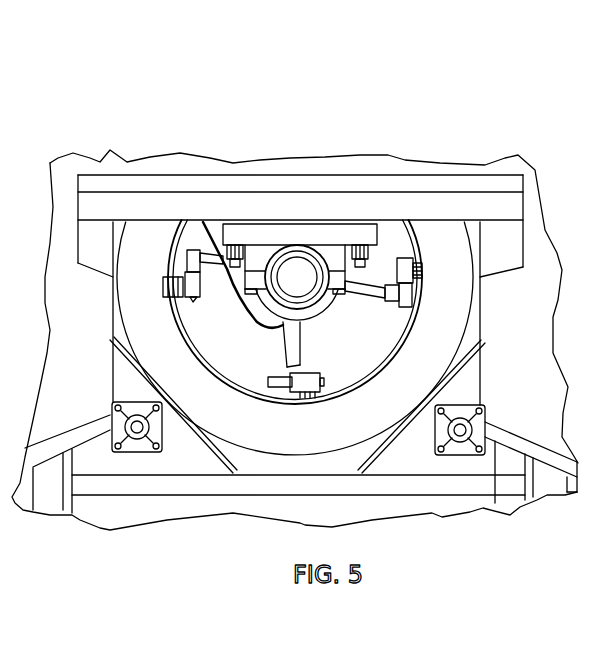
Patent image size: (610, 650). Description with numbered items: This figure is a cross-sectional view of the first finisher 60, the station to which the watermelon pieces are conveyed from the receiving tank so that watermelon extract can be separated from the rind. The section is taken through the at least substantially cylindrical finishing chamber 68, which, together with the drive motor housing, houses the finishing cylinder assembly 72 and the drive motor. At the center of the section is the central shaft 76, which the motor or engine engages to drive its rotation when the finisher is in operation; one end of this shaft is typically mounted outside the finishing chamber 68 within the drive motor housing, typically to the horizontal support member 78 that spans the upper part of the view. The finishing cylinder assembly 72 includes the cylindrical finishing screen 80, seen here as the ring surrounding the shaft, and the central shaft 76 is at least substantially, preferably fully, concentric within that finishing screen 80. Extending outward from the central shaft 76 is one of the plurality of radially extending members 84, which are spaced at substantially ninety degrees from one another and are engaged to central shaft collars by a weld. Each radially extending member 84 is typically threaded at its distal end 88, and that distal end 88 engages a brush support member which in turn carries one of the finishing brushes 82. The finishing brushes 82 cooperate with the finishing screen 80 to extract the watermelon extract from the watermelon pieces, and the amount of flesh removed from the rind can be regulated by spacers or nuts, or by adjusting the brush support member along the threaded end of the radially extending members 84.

The first finisher 60 is at (469, 100).
The cylindrical finishing chamber 68 is at (478, 332).
The finishing cylinder assembly 72 is at (160, 287).
The central shaft 76 is at (298, 268).
The horizontal support member 78 is at (172, 205).
The cylindrical finishing screen 80 is at (397, 362).
The finishing brushes 82 is at (305, 372).
The radially extending members 84 is at (280, 339).
The distal end 88 is at (267, 371).